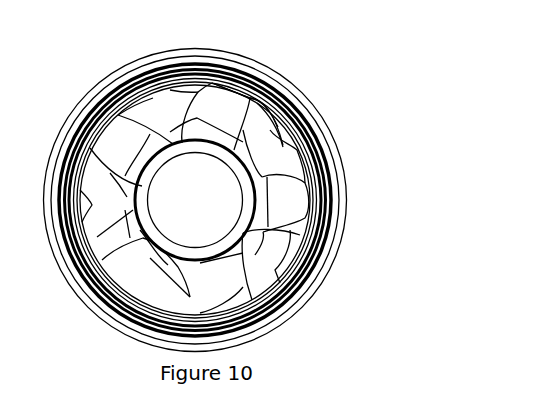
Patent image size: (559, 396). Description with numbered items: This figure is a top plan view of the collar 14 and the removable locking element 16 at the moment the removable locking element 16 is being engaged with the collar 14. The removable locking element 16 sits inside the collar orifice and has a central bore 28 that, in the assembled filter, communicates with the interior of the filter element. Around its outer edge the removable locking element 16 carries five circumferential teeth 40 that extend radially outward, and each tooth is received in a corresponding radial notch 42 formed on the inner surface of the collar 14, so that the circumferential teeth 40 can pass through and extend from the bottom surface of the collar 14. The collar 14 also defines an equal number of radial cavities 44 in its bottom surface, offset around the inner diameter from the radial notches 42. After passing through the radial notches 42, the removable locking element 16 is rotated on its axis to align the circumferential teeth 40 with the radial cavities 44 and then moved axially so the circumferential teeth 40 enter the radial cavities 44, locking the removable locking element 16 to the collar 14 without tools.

The collar 14 is at (200, 52).
The removable locking element 16 is at (240, 102).
The central bore 28 is at (95, 260).
The circumferential teeth 40 is at (297, 207).
The radial notches 42 is at (302, 164).
The radial cavities 44 is at (295, 246).